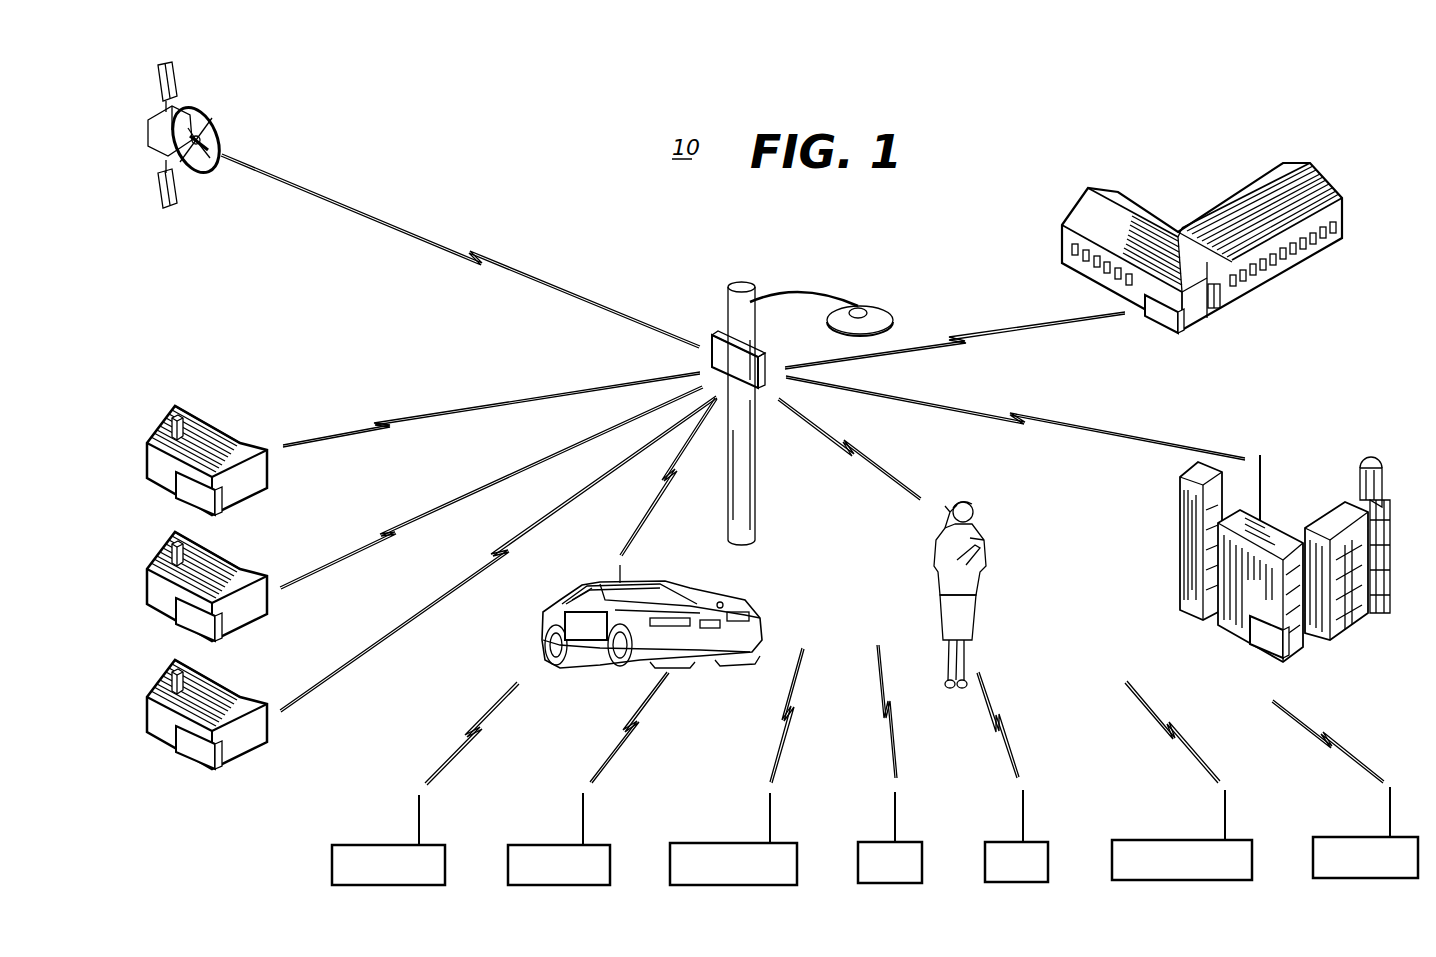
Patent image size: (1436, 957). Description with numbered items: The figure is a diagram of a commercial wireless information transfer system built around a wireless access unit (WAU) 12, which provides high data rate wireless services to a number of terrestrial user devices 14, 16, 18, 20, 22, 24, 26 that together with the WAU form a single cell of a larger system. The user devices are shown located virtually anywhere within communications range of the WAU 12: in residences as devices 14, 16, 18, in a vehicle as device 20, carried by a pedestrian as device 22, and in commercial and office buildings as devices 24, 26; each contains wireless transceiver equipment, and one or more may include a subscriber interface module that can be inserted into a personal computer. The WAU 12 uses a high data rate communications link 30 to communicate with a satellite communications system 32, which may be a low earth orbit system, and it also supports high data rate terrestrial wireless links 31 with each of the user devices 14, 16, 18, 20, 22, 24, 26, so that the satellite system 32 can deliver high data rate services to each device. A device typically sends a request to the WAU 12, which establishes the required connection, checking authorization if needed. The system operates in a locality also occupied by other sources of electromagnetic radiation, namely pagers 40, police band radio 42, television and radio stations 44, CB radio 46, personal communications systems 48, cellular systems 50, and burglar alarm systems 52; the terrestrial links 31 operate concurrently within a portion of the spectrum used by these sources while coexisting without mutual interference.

The wireless access unit (WAU) 12 is at (770, 357).
The terrestrial user device 14 is at (222, 500).
The terrestrial user device 16 is at (222, 626).
The terrestrial user device 18 is at (222, 754).
The terrestrial user device 20 is at (588, 652).
The terrestrial user device 22 is at (945, 510).
The terrestrial user device 24 is at (1190, 325).
The terrestrial user device 26 is at (1300, 647).
The high data rate communications link 30 is at (362, 210).
The high data rate terrestrial wireless links 31 is at (668, 478).
The satellite communications system 32 is at (212, 118).
The pagers 40 is at (332, 866).
The police band radio 42 is at (508, 866).
The television and radio stations 44 is at (670, 866).
The CB radio 46 is at (858, 864).
The personal communications systems (PCS) 48 is at (985, 864).
The cellular systems 50 is at (1112, 862).
The burglar alarm systems 52 is at (1313, 860).